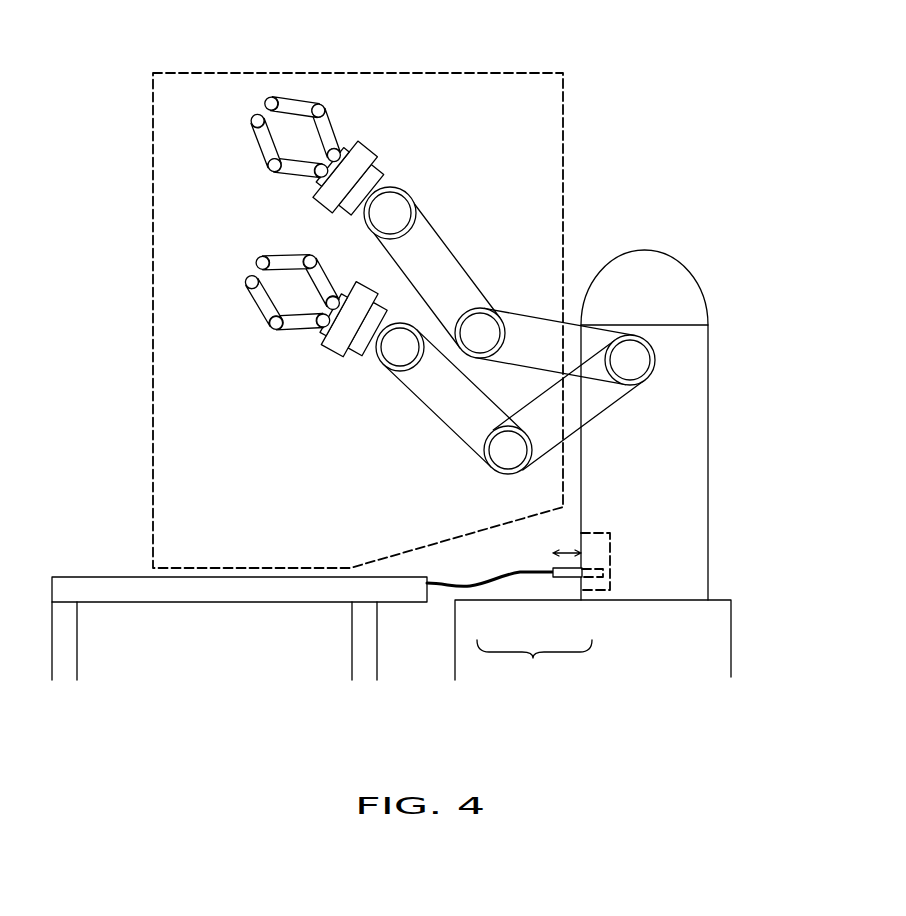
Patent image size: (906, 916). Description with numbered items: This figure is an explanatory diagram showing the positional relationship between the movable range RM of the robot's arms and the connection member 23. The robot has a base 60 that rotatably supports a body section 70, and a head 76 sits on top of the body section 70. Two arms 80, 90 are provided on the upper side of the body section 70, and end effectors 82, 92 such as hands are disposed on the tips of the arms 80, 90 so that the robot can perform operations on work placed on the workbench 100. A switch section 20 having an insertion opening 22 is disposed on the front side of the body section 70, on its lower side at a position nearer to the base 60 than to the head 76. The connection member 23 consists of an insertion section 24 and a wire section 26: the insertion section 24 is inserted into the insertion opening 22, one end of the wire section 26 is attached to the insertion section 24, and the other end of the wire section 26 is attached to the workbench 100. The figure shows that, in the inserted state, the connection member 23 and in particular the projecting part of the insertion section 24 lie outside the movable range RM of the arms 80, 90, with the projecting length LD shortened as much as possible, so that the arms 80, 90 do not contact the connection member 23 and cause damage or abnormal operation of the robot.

The movable range RM is at (380, 73).
The end effector 92 is at (358, 145).
The arm 90 is at (449, 262).
The end effector 82 is at (322, 345).
The arm 80 is at (443, 412).
The head 76 is at (646, 250).
The body section 70 is at (708, 443).
The base 60 is at (732, 640).
The switch section 20 is at (598, 533).
The insertion opening 22 is at (603, 574).
The insertion section 24 is at (568, 578).
The wire section 26 is at (500, 587).
The connection member 23 is at (534, 662).
The workbench 100 is at (107, 577).
The length of the projecting part LD is at (567, 541).